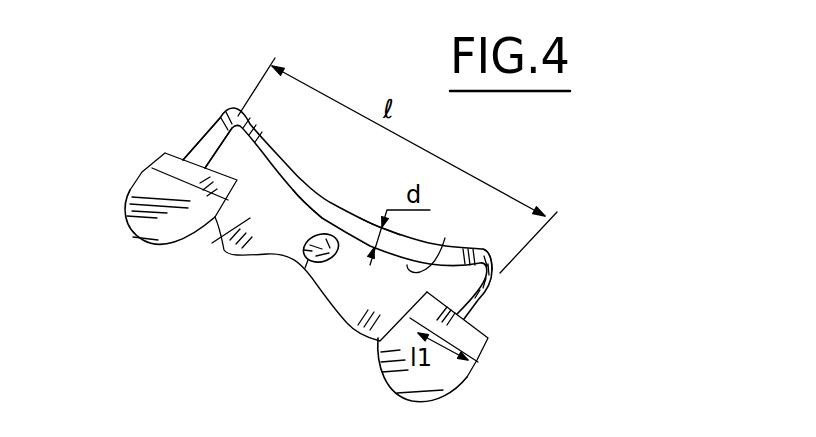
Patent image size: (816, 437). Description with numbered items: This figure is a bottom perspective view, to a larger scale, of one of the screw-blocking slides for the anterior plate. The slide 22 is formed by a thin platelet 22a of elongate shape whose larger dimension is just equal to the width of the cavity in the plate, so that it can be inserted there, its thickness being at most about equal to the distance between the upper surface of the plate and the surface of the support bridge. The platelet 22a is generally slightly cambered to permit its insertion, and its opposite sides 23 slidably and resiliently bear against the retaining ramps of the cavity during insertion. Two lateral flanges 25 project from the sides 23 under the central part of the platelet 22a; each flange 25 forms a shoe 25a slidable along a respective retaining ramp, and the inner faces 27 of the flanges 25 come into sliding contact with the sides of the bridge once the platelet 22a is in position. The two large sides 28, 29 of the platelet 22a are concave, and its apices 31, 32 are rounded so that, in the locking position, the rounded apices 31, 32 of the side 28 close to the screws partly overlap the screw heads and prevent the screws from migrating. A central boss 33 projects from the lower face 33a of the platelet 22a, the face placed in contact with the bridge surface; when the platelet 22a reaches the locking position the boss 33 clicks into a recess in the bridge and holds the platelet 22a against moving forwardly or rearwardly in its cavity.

The slide 22 is at (351, 198).
The platelet 22a is at (359, 221).
The opposite sides of the platelet 23 is at (198, 132).
The lateral flanges 25 is at (143, 180).
The shoe 25a is at (141, 265).
The inner faces of the flanges 27 is at (222, 250).
The large side of the platelet 28 is at (313, 197).
The large side of the platelet 29 is at (260, 255).
The rounded apex 31 is at (495, 256).
The rounded apex 32 is at (237, 103).
The central boss 33 is at (308, 260).
The lower face of the platelet 33a is at (445, 238).